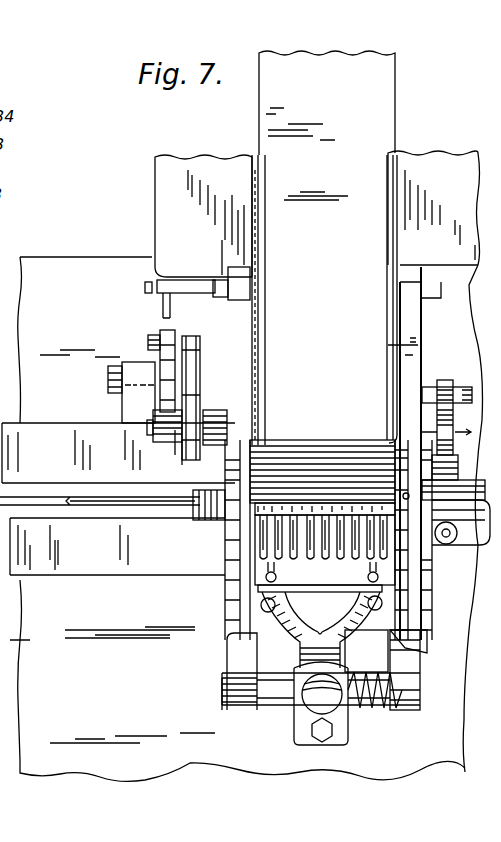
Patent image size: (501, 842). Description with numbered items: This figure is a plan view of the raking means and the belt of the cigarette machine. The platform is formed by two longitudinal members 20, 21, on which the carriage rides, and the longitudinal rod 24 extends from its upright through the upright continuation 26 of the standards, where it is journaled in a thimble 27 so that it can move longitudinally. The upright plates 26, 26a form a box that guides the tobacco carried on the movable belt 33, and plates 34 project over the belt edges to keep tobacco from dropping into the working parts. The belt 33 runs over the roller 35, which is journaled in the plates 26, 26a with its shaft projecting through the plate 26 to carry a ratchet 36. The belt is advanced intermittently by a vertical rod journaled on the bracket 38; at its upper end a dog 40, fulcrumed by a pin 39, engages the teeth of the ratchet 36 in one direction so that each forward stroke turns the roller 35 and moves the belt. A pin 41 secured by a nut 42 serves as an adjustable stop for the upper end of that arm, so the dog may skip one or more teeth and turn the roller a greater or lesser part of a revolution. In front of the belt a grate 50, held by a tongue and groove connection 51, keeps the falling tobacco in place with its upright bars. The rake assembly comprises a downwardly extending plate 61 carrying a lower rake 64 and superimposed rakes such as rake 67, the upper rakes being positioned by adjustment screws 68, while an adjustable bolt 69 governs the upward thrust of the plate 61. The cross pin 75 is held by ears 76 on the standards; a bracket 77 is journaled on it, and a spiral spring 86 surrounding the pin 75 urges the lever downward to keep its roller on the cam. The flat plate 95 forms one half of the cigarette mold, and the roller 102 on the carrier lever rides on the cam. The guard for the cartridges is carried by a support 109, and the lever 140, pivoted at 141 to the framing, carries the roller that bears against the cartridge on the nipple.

The longitudinal member 20 is at (118, 453).
The longitudinal member 21 is at (117, 546).
The longitudinal rod 24 is at (68, 502).
The upright plate 26 is at (252, 328).
The upright plate 26a is at (405, 329).
The thimble 27 is at (230, 530).
The movable belt 33 is at (327, 125).
The plate 34 is at (276, 275).
The roller 35 is at (395, 438).
The ratchet 36 is at (201, 370).
The bracket 38 is at (128, 404).
The pin 39 is at (148, 340).
The dog 40 is at (185, 362).
The pin 41 is at (163, 313).
The nut 42 is at (145, 293).
The grate 50 is at (326, 505).
The tongue and groove connection 51 is at (406, 492).
The plate 61 is at (320, 626).
The lower rake 64 is at (357, 525).
The rake 67 is at (325, 550).
The adjustment screw 68 is at (370, 587).
The adjustable bolt 69 is at (322, 694).
The cross pin 75 is at (275, 706).
The ear 76 is at (232, 660).
The bracket 77 is at (332, 715).
The spiral spring 86 is at (356, 706).
The flat plate 95 is at (366, 651).
The roller 102 is at (458, 548).
The support 109 is at (430, 568).
The lever 140 is at (453, 422).
The pivot 141 is at (463, 380).